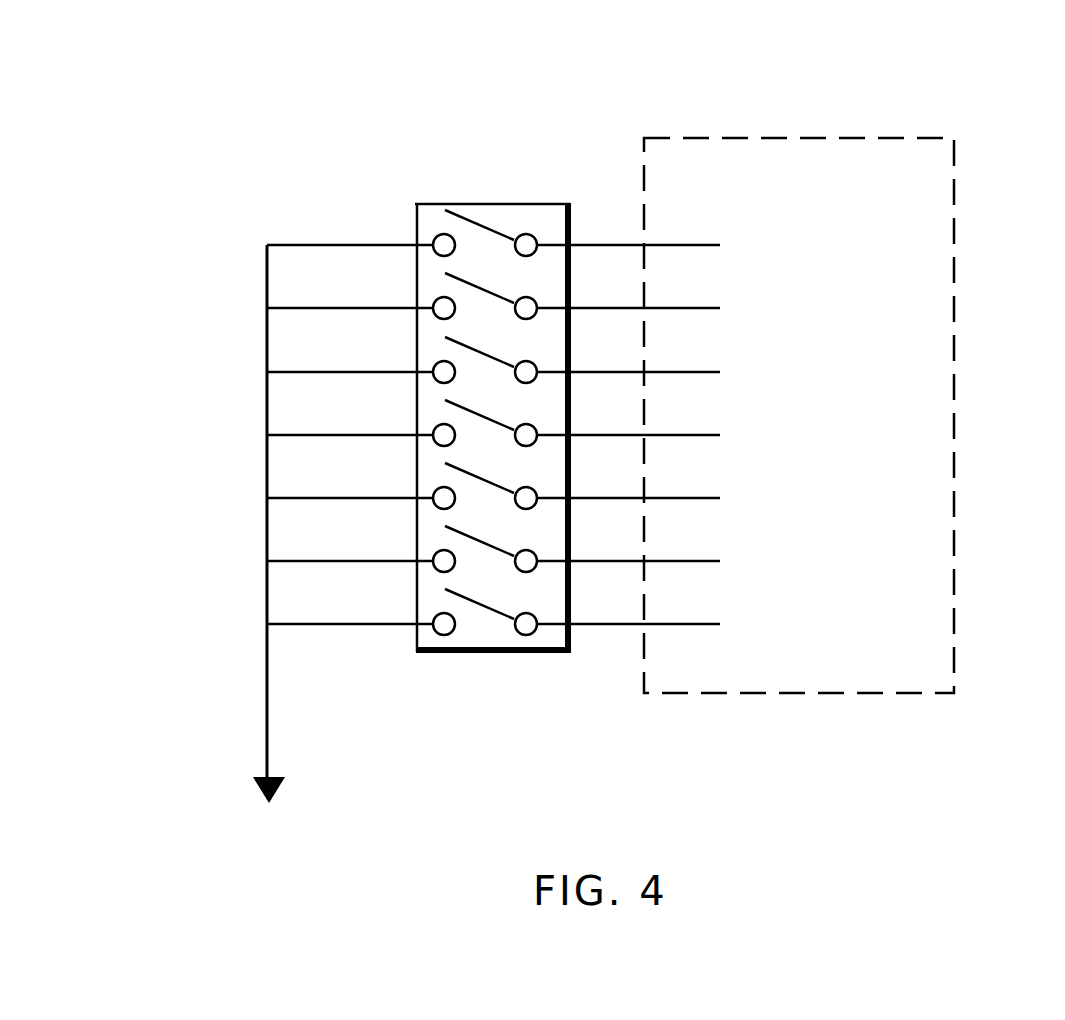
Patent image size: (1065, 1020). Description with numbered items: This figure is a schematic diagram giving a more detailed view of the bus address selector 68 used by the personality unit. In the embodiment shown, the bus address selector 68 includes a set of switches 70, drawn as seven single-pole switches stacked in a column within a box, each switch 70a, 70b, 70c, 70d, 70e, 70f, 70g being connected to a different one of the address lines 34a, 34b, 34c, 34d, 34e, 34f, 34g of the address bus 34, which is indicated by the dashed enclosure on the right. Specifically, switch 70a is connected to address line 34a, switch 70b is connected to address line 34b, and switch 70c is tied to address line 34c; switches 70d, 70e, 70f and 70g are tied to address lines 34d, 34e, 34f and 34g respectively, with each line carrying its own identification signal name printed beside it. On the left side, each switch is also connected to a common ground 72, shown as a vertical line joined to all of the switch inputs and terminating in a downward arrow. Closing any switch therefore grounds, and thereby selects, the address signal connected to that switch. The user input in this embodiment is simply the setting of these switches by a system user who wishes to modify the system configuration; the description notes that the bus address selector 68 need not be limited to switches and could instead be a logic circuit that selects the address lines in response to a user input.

The bus address selector 68 is at (548, 122).
The set of switches 70 is at (489, 652).
The switch 70a is at (550, 245).
The switch 70b is at (550, 308).
The switch 70c is at (550, 372).
The switch 70d is at (550, 435).
The switch 70e is at (550, 498).
The switch 70f is at (550, 561).
The switch 70g is at (550, 624).
The ground 72 is at (265, 412).
The address bus 34 is at (955, 285).
The address line 34a is at (672, 243).
The address line 34b is at (672, 306).
The address line 34c is at (672, 370).
The address line 34d is at (672, 433).
The address line 34e is at (672, 496).
The address line 34f is at (672, 559).
The address line 34g is at (672, 622).